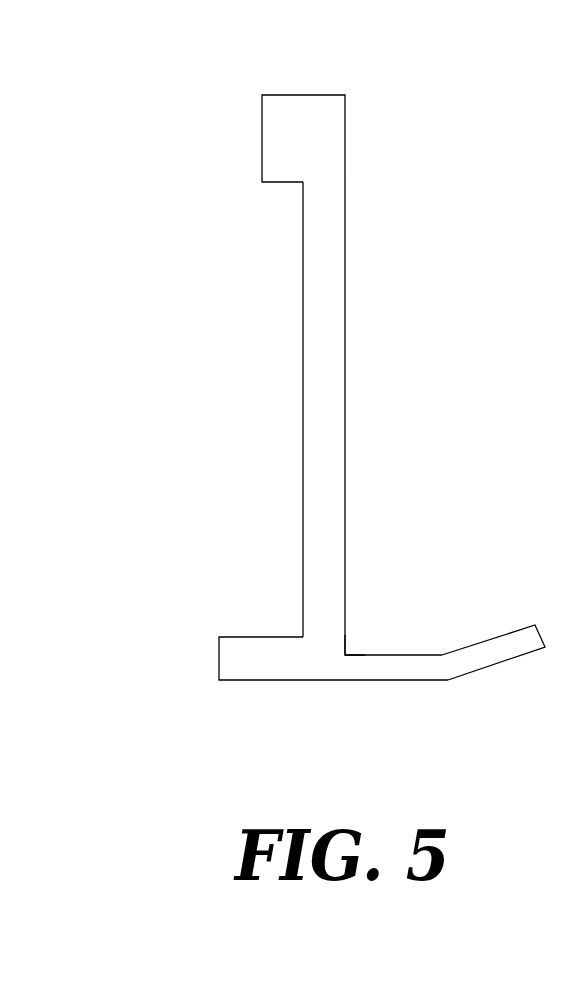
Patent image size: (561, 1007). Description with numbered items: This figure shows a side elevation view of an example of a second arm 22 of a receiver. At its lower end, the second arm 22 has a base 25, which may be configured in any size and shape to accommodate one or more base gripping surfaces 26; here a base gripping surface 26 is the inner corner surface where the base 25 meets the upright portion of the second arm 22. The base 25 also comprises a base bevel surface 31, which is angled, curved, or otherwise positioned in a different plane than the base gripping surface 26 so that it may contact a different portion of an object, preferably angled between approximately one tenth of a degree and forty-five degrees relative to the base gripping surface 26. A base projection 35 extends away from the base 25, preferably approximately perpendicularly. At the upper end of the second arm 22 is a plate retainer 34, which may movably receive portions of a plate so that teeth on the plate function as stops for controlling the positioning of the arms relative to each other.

The second arm 22 is at (240, 88).
The plate retainer 34 is at (300, 147).
The base gripping surface 26 is at (378, 650).
The base bevel surface 31 is at (503, 626).
The base projection 35 is at (262, 660).
The base 25 is at (423, 665).